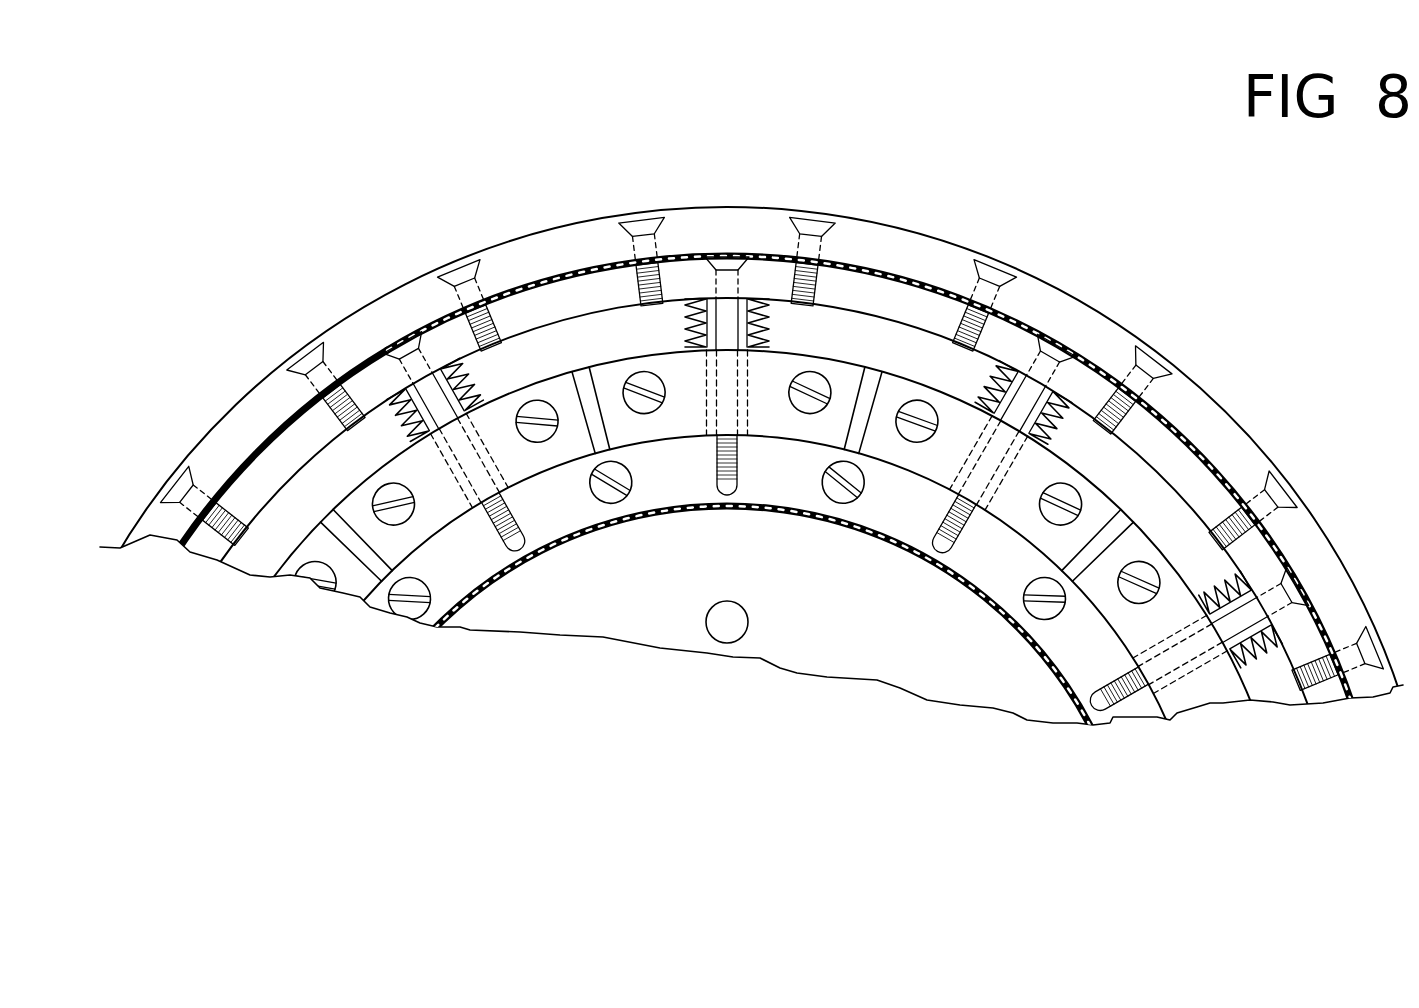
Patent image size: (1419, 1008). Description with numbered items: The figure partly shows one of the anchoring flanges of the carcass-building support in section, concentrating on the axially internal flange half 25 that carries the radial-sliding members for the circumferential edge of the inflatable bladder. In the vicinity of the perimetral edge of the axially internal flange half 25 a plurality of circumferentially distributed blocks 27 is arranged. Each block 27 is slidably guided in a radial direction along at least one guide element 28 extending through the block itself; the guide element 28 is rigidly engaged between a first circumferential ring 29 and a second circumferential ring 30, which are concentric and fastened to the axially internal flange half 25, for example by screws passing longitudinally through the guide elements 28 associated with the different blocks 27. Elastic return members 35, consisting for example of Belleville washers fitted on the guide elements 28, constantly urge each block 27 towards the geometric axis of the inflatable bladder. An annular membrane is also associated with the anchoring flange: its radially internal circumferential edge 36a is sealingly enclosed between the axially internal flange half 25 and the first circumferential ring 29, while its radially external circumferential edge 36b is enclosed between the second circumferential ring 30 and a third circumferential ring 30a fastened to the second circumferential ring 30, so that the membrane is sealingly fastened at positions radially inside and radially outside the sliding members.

The axially internal flange half 25 is at (850, 637).
The blocks 27 is at (547, 500).
The guide element 28 is at (1028, 398).
The first circumferential ring 29 is at (1073, 640).
The second circumferential ring 30 is at (900, 303).
The third circumferential ring 30a is at (555, 253).
The elastic return members 35 is at (692, 300).
The radially internal circumferential edge 36a is at (478, 600).
The radially external circumferential edge 36b is at (253, 447).